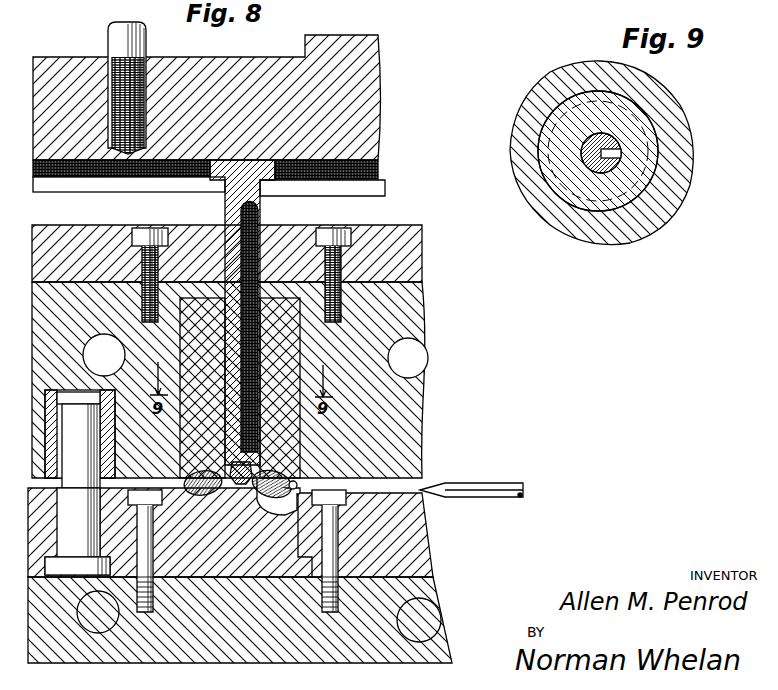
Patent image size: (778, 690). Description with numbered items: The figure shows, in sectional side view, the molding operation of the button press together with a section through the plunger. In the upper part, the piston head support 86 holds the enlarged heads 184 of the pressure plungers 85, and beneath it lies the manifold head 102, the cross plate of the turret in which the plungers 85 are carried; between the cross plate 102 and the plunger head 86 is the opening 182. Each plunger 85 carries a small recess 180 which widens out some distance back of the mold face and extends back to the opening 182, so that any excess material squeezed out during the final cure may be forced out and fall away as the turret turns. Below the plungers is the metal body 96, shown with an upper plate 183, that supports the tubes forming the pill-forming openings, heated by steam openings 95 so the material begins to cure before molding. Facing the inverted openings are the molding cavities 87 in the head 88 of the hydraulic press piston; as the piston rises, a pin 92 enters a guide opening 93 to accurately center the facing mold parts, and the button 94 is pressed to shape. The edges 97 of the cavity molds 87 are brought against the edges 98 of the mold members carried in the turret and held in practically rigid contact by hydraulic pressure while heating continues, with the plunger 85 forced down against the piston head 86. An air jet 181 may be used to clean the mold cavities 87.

In FIG. 8, the pressure plunger 85 is at (226, 206).
In FIG. 9, the pressure plunger 85 is at (612, 148).
In FIG. 8, the piston head support 86 is at (350, 98).
In FIG. 8, the molding cavity 87 is at (340, 520).
In FIG. 8, the head of hydraulic press piston 88 is at (405, 562).
In FIG. 8, the pin 92 is at (77, 489).
In FIG. 8, the guide opening 93 is at (66, 400).
In FIG. 8, the button 94 is at (365, 432).
In FIG. 8, the steam opening 95 is at (410, 356).
In FIG. 8, the metal body 96 is at (408, 308).
In FIG. 8, the edge of cavity mold 97 is at (300, 478).
In FIG. 8, the edge of mold member 98 is at (290, 462).
In FIG. 8, the manifold head 102 is at (382, 190).
In FIG. 8, the recess 180 is at (252, 220).
In FIG. 9, the recess 180 is at (621, 153).
In FIG. 8, the air jet 181 is at (497, 481).
In FIG. 8, the opening 182 is at (409, 224).
In FIG. 8, the top plate 183 is at (410, 262).
In FIG. 8, the enlarged head of rod 184 is at (210, 175).